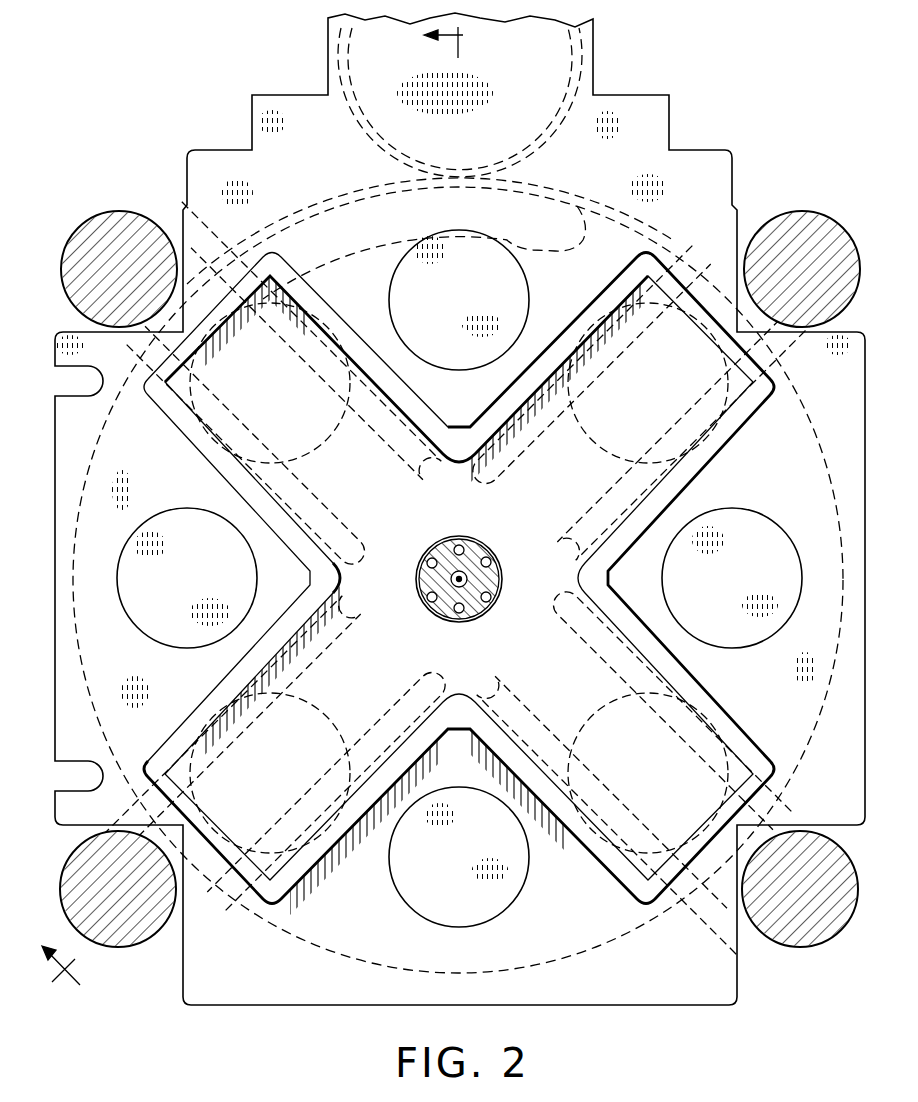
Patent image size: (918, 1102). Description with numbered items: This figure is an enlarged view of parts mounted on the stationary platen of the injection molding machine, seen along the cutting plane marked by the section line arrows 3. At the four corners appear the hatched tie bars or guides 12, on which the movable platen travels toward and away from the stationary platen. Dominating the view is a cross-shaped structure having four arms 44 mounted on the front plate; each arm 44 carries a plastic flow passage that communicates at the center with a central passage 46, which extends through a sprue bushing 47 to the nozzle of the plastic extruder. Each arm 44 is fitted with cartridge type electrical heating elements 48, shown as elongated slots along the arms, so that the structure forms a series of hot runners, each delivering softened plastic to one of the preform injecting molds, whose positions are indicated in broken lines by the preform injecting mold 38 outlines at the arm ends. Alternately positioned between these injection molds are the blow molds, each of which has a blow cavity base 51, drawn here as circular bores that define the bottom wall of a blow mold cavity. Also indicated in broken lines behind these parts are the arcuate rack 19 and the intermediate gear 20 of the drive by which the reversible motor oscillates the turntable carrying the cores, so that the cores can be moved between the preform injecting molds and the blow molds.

The section line 3- 3 is at (262, 513).
The tie bars or guides 12 is at (137, 222).
The arcuate rack 19 is at (318, 204).
The intermediate gear 20 is at (357, 127).
The preform injecting mold 38 is at (338, 430).
The arms 44 is at (400, 677).
The central passage 46 is at (473, 562).
The sprue bushing 47 is at (463, 571).
The cartridge type electrical heating elements 48 is at (554, 372).
The blow cavity base 51 is at (393, 286).